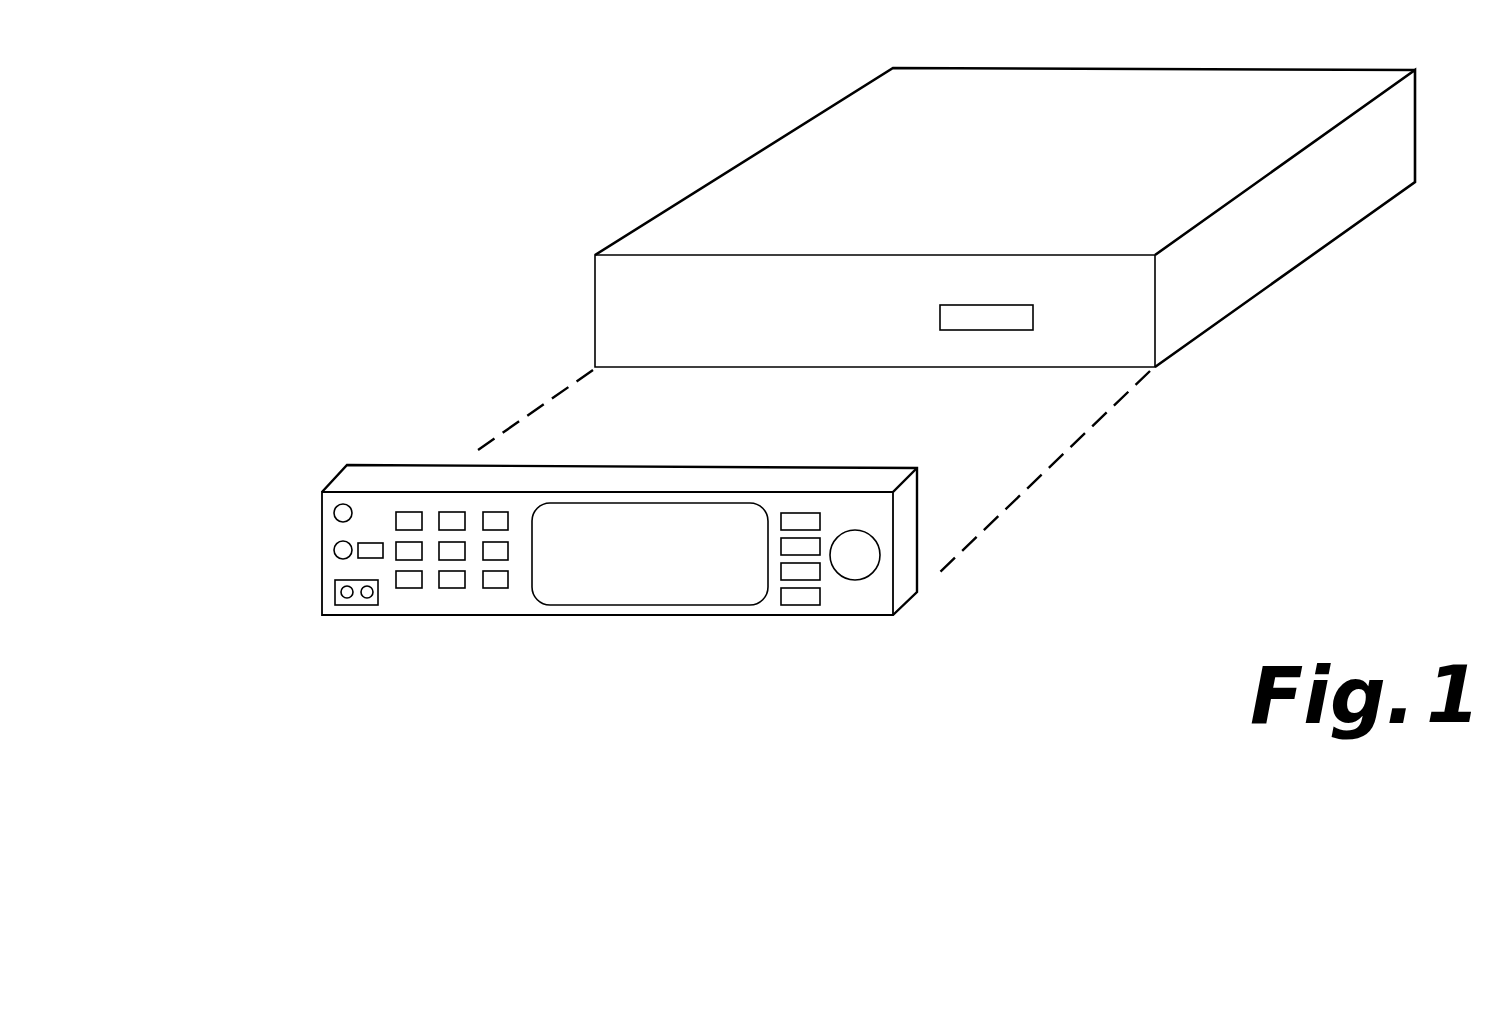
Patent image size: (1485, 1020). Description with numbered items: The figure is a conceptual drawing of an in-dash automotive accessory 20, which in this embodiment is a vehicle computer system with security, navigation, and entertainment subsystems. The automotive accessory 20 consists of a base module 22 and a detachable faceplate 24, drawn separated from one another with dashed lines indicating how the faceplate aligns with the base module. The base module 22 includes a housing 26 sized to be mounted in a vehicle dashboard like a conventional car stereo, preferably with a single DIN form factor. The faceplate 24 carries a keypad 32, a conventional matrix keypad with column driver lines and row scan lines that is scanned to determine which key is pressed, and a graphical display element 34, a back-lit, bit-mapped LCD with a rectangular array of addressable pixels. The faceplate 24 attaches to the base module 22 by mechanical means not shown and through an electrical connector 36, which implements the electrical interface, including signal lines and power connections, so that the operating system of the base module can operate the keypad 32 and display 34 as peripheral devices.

The in-dash automotive accessory 20 is at (340, 259).
The base module 22 is at (1335, 208).
The detachable faceplate 24 is at (365, 478).
The housing 26 is at (813, 143).
The keypad 32 is at (438, 605).
The display element 34 is at (713, 592).
The electrical connector 36 is at (1013, 318).